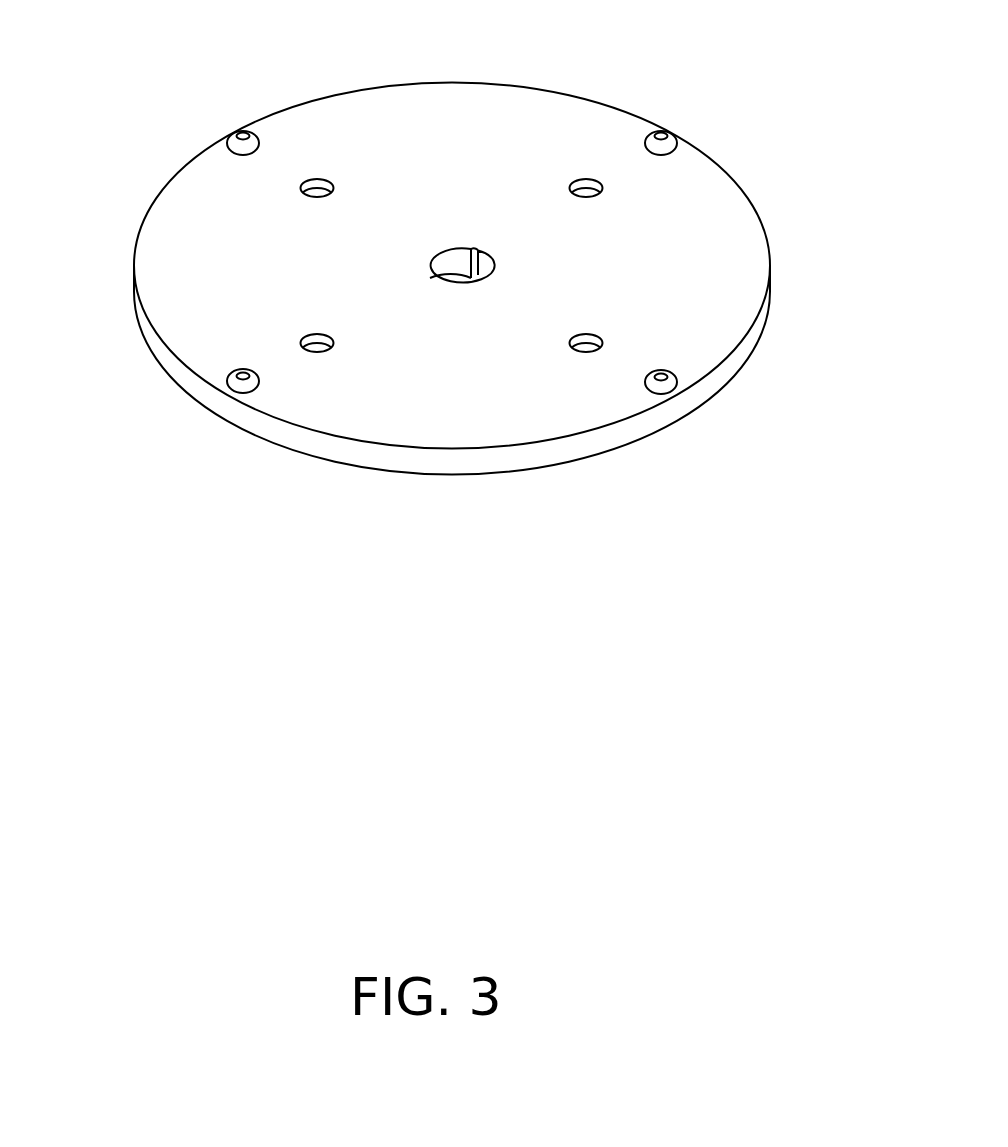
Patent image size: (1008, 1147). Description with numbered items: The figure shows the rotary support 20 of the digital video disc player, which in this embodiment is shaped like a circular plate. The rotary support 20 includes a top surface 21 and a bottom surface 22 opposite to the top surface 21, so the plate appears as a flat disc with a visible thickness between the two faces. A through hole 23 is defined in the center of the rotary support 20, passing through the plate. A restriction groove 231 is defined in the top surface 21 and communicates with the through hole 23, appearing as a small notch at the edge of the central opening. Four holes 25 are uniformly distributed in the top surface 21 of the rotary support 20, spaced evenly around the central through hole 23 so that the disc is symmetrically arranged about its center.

The rotary support 20 is at (451, 285).
The top surface 21 is at (708, 212).
The bottom surface 22 is at (726, 392).
The through hole 23 is at (543, 141).
The restriction groove 231 is at (478, 250).
The holes 25 is at (313, 181).